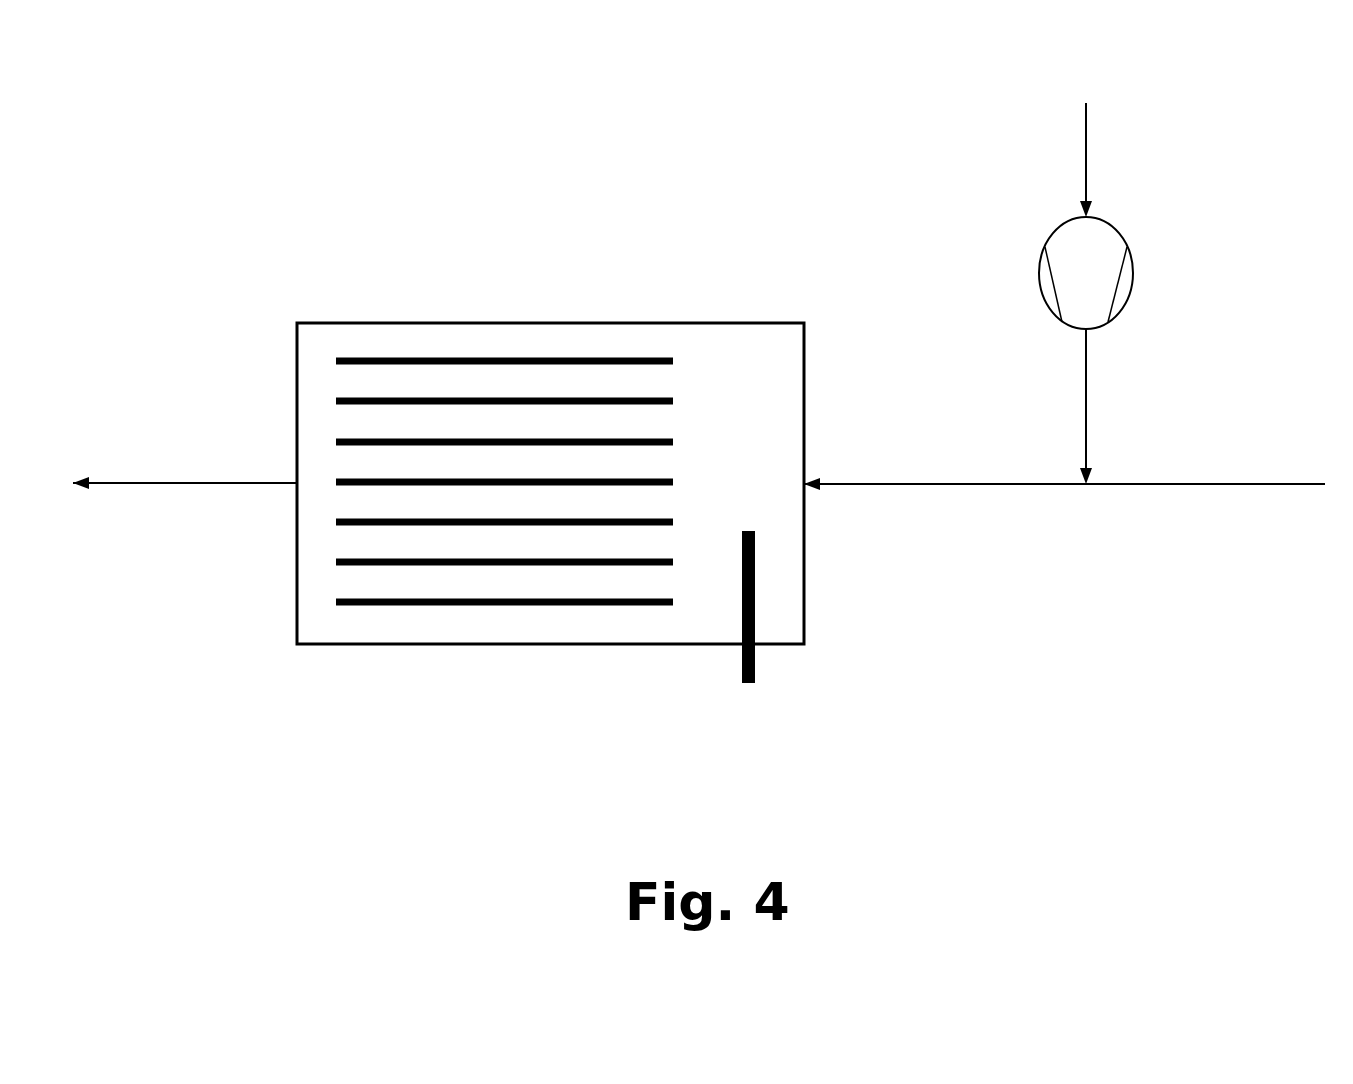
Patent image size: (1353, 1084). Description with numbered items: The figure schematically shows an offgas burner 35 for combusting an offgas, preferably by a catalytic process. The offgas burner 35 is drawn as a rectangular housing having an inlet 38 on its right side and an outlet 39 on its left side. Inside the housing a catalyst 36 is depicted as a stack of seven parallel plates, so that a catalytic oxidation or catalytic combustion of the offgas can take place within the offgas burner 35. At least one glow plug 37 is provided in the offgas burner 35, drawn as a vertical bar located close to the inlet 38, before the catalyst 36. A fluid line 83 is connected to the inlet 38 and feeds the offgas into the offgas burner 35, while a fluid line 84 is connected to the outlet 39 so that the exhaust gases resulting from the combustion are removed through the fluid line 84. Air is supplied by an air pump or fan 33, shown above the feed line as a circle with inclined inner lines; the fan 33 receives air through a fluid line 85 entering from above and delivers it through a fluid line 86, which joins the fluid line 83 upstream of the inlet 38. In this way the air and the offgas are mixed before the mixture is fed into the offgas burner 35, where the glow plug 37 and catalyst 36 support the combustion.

The fan 33 is at (1122, 233).
The offgas burner 35 is at (524, 323).
The catalyst 36 is at (475, 604).
The glow plug 37 is at (756, 665).
The inlet 38 is at (813, 476).
The outlet 39 is at (297, 483).
The fluid line 83 is at (981, 487).
The fluid line 84 is at (192, 486).
The fluid line 85 is at (1086, 152).
The fluid line 86 is at (1086, 408).